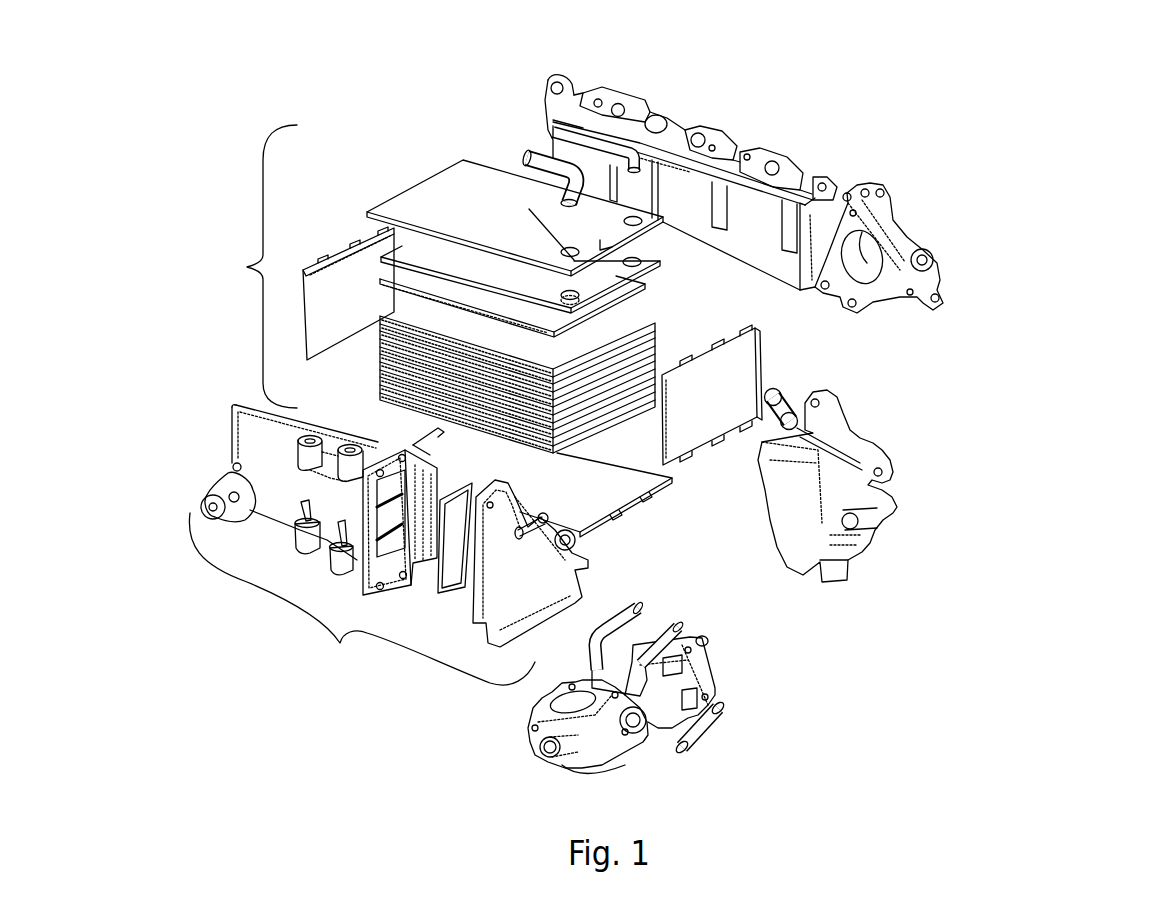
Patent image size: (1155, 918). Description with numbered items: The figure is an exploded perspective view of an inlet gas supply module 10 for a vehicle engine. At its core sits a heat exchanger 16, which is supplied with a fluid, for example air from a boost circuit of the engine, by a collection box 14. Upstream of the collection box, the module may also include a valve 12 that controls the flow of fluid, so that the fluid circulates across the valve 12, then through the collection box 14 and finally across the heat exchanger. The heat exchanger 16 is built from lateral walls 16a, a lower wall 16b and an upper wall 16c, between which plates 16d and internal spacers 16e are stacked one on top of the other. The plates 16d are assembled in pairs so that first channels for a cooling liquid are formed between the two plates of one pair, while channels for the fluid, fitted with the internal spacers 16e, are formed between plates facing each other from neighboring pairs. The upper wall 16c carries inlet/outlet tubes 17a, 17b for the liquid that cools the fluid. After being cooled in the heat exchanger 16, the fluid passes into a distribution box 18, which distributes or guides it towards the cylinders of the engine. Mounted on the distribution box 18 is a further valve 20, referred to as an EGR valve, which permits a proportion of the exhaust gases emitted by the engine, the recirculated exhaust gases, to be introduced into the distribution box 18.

The inlet gas supply module 10 is at (1022, 320).
The valve 12 is at (735, 723).
The collection box 14 is at (388, 545).
The heat exchanger 16 is at (246, 267).
The lateral walls 16a is at (335, 253).
The lower wall 16b is at (640, 500).
The upper wall 16c is at (426, 190).
The plates 16d is at (640, 278).
The internal spacers 16e is at (616, 315).
The inlet/outlet tube 17a is at (548, 108).
The inlet/outlet tube 17b is at (543, 160).
The distribution box 18 is at (727, 133).
The valve 20 is at (893, 460).